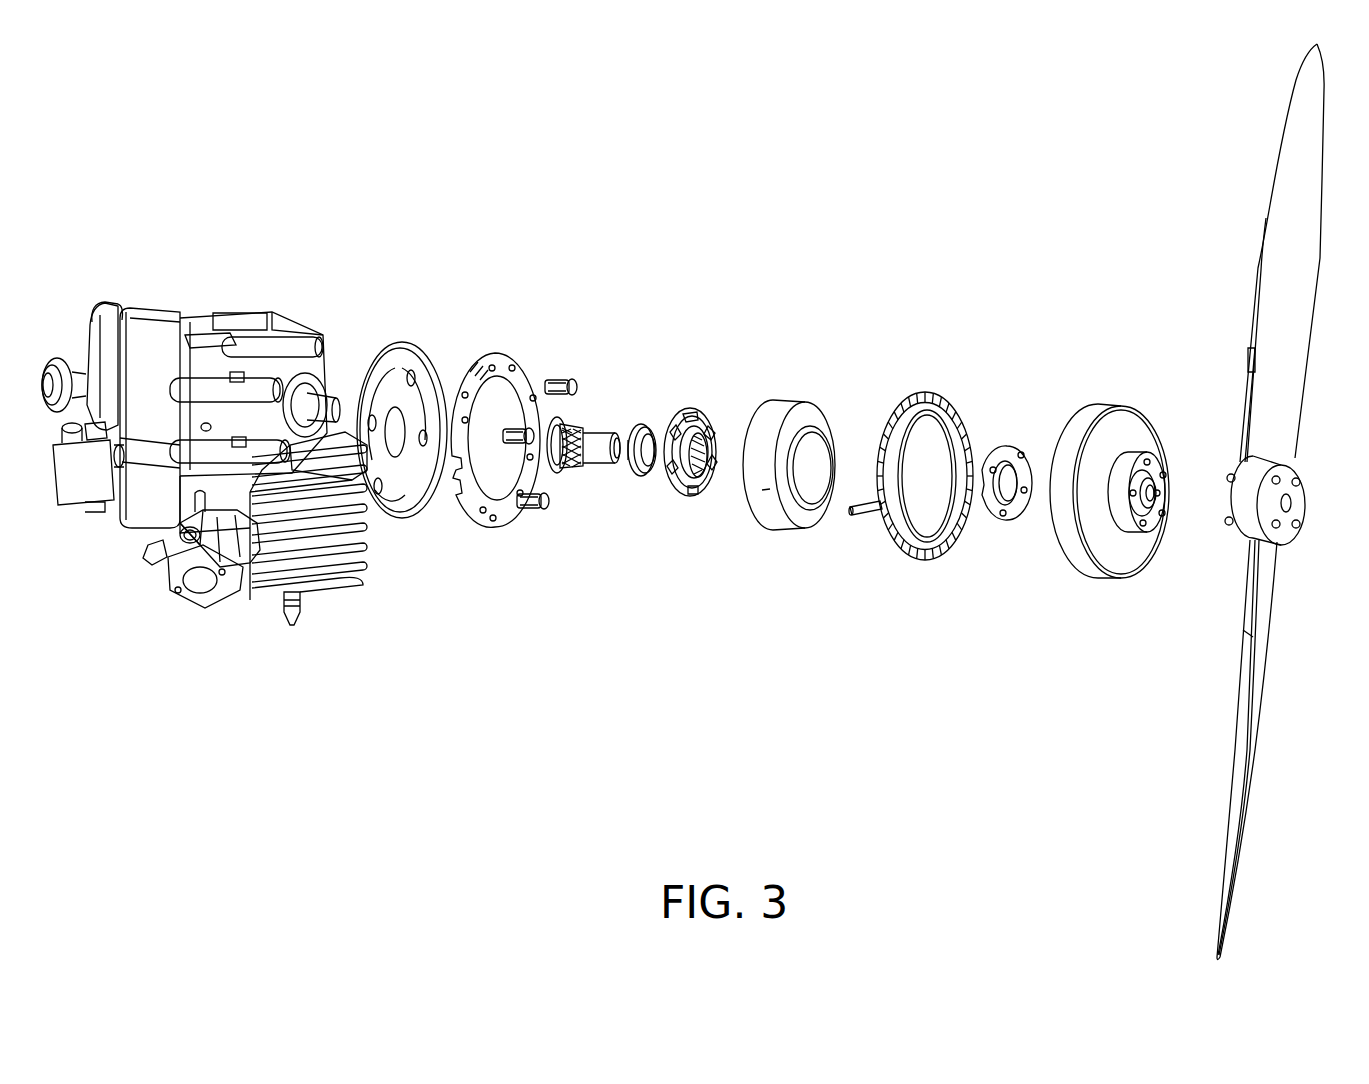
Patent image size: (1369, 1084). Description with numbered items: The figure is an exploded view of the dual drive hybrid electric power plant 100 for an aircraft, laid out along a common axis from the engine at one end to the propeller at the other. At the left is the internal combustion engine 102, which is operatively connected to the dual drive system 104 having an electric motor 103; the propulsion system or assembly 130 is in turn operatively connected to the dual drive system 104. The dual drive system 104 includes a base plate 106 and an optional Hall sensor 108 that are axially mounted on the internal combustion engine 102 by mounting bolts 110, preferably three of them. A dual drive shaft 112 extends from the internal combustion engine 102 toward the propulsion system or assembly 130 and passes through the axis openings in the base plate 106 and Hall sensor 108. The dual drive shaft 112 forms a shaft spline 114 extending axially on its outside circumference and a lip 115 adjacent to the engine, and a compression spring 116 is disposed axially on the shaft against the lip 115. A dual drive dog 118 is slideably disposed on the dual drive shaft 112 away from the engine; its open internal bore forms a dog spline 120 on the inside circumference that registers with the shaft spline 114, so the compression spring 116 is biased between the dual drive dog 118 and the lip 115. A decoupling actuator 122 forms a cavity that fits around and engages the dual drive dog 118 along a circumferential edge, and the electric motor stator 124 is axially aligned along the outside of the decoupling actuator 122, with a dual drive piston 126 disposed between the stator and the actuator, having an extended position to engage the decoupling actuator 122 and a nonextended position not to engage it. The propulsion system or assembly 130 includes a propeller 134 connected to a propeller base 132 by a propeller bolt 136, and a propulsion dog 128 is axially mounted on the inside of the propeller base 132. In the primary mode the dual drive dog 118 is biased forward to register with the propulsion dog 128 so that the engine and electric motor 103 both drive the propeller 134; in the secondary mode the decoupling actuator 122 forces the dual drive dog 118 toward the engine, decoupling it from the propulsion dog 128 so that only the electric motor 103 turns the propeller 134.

The dual drive hybrid electric power plant 100 is at (705, 141).
The internal combustion engine 102 is at (181, 313).
The electric motor 103 is at (1166, 377).
The dual drive system 104 is at (1023, 314).
The base plate 106 is at (405, 518).
The Hall sensor 108 is at (472, 523).
The mounting bolts 110 is at (510, 428).
The dual drive shaft 112 is at (601, 440).
The shaft spline 114 is at (575, 468).
The lip 115 is at (555, 474).
The compression spring 116 is at (641, 427).
The dual drive dog 118 is at (673, 498).
The dog spline 120 is at (708, 447).
The decoupling actuator 122 is at (779, 530).
The electric motor stator 124 is at (918, 560).
The dual drive piston 126 is at (858, 517).
The propulsion dog 128 is at (1003, 445).
The propulsion system or assembly 130 is at (1195, 957).
The propeller base 132 is at (1090, 579).
The propeller 134 is at (1267, 219).
The propeller bolt 136 is at (1292, 502).